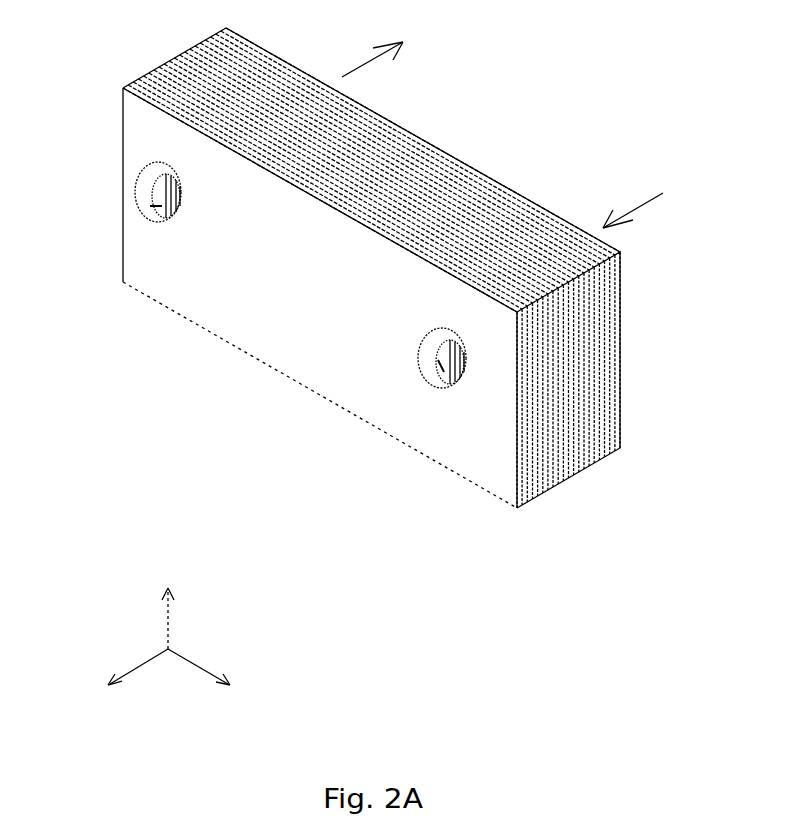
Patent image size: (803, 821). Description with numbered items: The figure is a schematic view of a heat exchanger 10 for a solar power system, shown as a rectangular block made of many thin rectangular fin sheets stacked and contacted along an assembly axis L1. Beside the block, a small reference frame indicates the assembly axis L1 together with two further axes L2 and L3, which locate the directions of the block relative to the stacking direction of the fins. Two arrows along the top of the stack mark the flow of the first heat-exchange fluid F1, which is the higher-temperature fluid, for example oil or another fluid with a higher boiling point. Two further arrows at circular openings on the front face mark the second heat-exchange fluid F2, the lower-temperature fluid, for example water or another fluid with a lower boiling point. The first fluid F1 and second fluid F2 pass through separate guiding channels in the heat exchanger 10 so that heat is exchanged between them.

The heat exchanger 10 is at (590, 709).
The first heat-exchange fluid F1 is at (519, 125).
The second heat-exchange fluid F2 is at (156, 197).
The assembly axis L1 is at (123, 680).
The second axis direction L2 is at (211, 680).
The third axis direction L3 is at (170, 605).